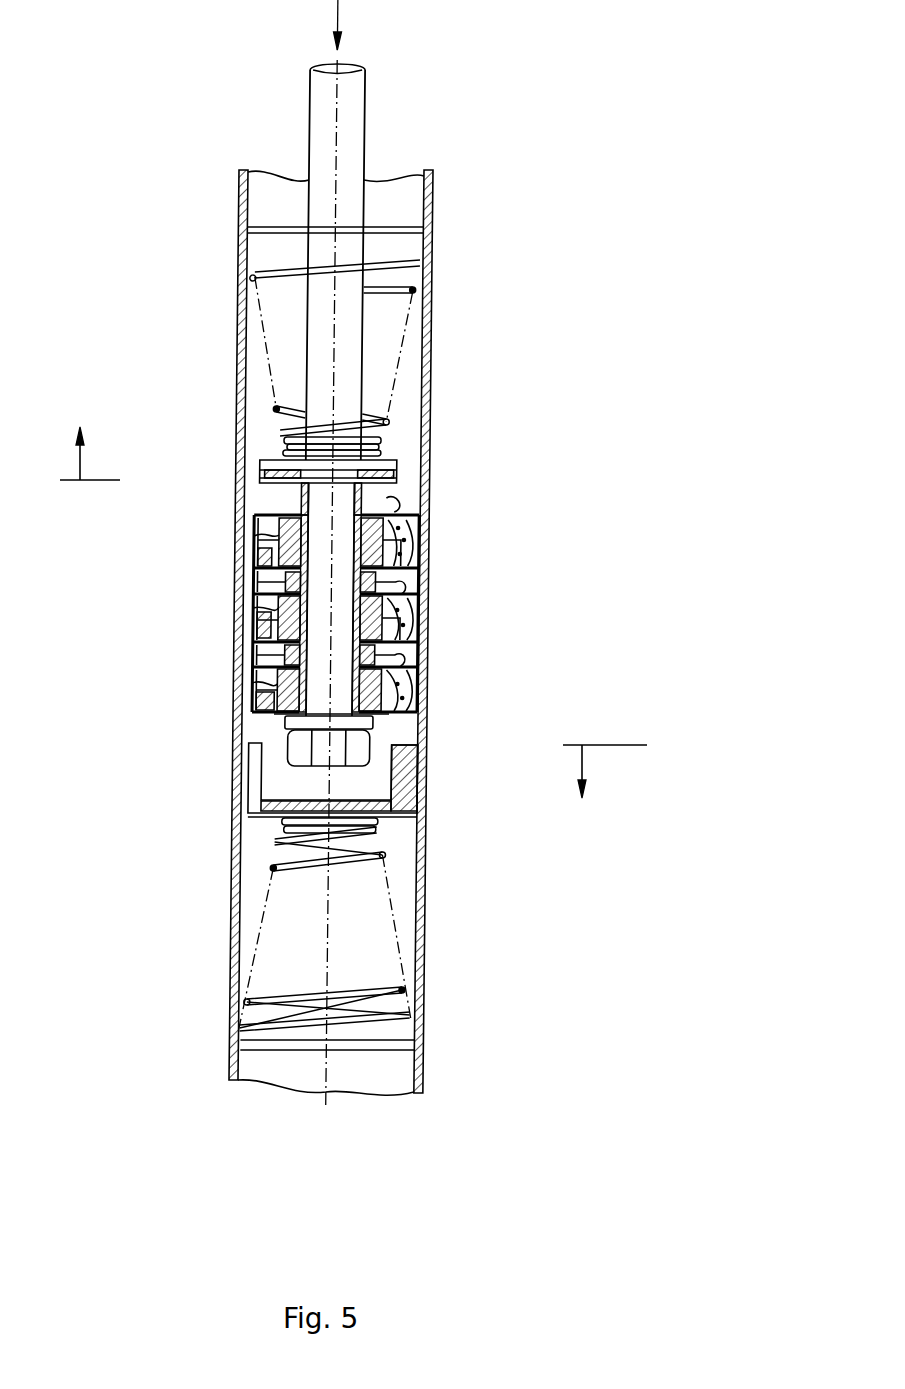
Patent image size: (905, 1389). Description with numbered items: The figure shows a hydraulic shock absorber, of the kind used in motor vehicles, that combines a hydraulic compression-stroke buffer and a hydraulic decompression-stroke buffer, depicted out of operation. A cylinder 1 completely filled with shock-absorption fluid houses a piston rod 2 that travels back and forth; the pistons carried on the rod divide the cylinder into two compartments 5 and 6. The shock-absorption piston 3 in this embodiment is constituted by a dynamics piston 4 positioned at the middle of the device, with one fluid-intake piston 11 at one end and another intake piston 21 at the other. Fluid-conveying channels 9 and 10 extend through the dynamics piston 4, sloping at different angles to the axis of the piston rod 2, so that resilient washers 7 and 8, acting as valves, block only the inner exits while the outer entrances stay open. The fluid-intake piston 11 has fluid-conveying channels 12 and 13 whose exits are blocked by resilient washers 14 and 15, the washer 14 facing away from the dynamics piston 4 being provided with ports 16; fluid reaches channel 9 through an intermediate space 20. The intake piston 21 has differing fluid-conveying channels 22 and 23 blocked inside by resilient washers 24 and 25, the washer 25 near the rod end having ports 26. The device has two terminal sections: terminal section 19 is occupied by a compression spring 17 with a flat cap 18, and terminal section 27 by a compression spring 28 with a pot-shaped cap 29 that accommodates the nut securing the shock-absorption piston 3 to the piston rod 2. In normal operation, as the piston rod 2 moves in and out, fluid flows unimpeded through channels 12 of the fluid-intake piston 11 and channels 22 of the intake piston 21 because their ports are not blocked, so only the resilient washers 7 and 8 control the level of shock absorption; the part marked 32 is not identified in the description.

The cylinder 1 is at (428, 413).
The piston rod 2 is at (345, 347).
The shock-absorption piston 3 is at (226, 606).
The dynamics piston 4 is at (272, 642).
The compartment 5 is at (334, 342).
The compartment 6 is at (326, 936).
The resilient washer 7 is at (270, 585).
The resilient washer 8 is at (265, 662).
The fluid-conveying channel 9 is at (262, 624).
The fluid-conveying channel 10 is at (405, 633).
The fluid-intake piston 11 is at (273, 545).
The fluid-conveying channel 12 is at (410, 545).
The fluid-conveying channel 13 is at (250, 520).
The resilient washer 14 is at (396, 500).
The resilient washer 15 is at (405, 572).
The ports 16 is at (428, 493).
The compression spring 17 is at (380, 408).
The cap 18 is at (400, 458).
The terminal section 19 is at (90, 434).
The intermediate space 20 is at (405, 603).
The intake piston 21 is at (418, 760).
The fluid-conveying channel 22 is at (400, 715).
The fluid-conveying channel 23 is at (252, 700).
The resilient washer 24 is at (405, 658).
The resilient washer 25 is at (268, 712).
The ports 26 is at (418, 808).
The terminal section 27 is at (605, 789).
The compression spring 28 is at (385, 990).
The pot-shaped cap 29 is at (393, 865).
The elastomer body 32 is at (400, 688).